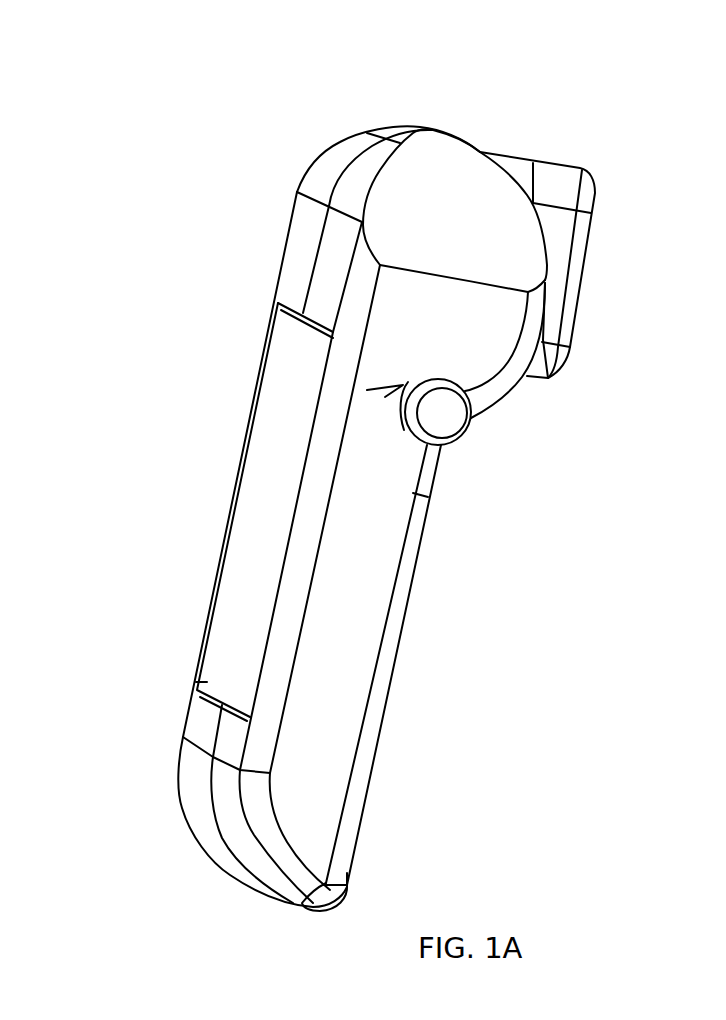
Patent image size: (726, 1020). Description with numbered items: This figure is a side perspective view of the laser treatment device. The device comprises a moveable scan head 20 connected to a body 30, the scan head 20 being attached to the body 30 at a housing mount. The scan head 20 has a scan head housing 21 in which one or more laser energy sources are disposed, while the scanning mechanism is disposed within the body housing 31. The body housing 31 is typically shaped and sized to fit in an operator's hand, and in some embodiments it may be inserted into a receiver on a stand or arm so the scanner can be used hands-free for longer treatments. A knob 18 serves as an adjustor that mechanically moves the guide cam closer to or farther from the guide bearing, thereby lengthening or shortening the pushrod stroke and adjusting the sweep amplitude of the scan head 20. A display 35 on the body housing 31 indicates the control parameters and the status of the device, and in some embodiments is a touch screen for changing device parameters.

The scan head 20 is at (598, 250).
The scan head housing 21 is at (553, 163).
The body 30 is at (453, 525).
The body housing 31 is at (300, 240).
The display 35 is at (278, 405).
The knob 18 is at (442, 413).